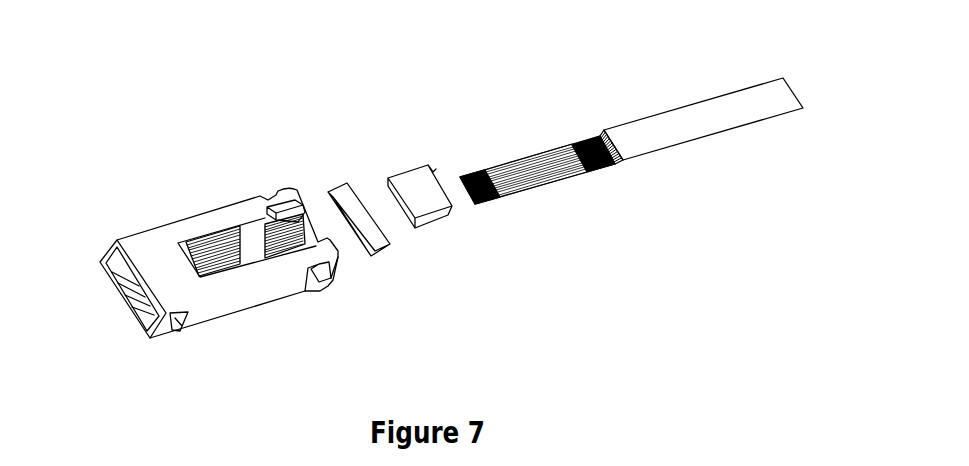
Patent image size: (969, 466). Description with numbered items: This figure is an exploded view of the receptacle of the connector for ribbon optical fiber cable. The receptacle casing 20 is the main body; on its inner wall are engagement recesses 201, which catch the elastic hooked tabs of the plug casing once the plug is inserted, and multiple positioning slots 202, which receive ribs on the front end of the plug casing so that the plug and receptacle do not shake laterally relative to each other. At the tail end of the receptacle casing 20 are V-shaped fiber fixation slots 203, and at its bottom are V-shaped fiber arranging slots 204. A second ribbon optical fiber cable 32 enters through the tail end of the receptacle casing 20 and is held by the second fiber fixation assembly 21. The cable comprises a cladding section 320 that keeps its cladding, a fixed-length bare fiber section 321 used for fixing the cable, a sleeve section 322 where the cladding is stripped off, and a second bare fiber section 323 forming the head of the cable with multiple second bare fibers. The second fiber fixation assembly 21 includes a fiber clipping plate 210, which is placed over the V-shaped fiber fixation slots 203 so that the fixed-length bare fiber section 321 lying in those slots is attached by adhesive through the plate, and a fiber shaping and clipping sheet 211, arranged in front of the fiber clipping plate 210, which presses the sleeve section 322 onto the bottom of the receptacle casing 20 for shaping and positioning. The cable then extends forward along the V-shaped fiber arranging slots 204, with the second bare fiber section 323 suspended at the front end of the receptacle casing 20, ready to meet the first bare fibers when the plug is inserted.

The receptacle casing 20 is at (282, 329).
The engagement recesses 201 is at (180, 329).
The positioning slots 202 is at (122, 259).
The V-shaped fiber fixation slots 203 is at (283, 228).
The V-shaped fiber arranging slots 204 is at (210, 257).
The second fiber fixation assembly 21 is at (430, 219).
The fiber clipping plate 210 is at (428, 200).
The fiber shaping and clipping sheet 211 is at (372, 233).
The second ribbon optical fiber cable 32 is at (631, 154).
The cladding section 320 is at (677, 137).
The fixed-length bare fiber section 321 is at (600, 168).
The sleeve section 322 is at (541, 153).
The second bare fiber section 323 is at (487, 202).